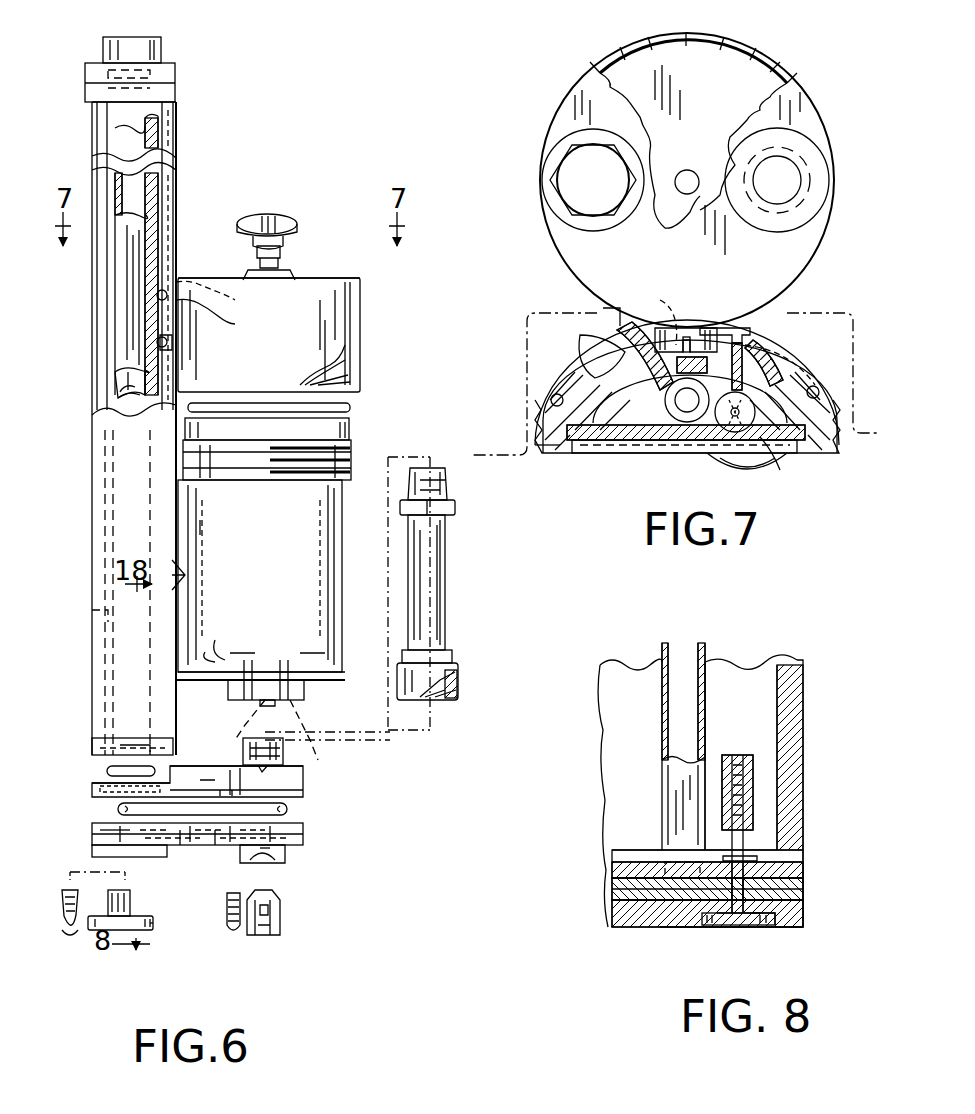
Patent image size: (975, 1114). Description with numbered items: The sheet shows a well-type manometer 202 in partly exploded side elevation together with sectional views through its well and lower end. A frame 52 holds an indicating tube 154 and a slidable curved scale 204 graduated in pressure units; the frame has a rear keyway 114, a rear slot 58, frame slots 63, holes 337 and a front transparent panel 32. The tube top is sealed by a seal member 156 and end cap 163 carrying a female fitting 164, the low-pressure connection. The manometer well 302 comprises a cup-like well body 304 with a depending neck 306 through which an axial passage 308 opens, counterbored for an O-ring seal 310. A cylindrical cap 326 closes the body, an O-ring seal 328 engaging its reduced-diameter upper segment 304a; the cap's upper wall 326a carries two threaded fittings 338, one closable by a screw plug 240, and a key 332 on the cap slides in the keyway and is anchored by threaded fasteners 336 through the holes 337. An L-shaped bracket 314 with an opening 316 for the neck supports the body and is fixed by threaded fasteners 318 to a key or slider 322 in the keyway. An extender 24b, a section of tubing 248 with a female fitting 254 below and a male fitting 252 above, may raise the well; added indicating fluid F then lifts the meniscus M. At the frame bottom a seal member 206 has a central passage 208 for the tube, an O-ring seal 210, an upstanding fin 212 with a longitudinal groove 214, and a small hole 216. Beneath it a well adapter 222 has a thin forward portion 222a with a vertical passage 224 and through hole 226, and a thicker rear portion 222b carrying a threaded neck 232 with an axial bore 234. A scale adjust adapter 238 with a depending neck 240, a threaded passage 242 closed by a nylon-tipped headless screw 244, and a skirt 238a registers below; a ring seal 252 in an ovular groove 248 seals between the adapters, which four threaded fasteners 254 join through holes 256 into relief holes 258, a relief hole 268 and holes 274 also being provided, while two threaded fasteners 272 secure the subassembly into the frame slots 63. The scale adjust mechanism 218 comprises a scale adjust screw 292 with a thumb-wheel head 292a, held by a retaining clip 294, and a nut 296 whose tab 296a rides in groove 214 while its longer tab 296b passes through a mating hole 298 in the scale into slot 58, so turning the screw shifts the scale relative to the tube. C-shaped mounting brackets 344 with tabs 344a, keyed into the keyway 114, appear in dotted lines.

In FIG. 6, the frame 52 is at (108, 445).
In FIG. 8, the frame 52 is at (805, 687).
In FIG. 6, the indicating tube 154 is at (128, 276).
In FIG. 7, the indicating tube 154 is at (665, 397).
In FIG. 8, the indicating tube 154 is at (662, 649).
In FIG. 6, the curved scale 204 is at (160, 192).
In FIG. 7, the curved scale 204 is at (580, 375).
In FIG. 8, the curved scale 204 is at (742, 662).
In FIG. 6, the keyway 114 is at (170, 234).
In FIG. 7, the keyway 114 is at (665, 328).
In FIG. 6, the female fitting 164 is at (150, 45).
In FIG. 6, the end cap 163 is at (160, 70).
In FIG. 6, the seal member 156 is at (170, 91).
In FIG. 6, the well-type manometer 202 is at (242, 94).
In FIG. 7, the well-type manometer 202 is at (528, 205).
In FIG. 6, the screw plug 240 is at (252, 220).
In FIG. 7, the screw plug 240 is at (548, 171).
In FIG. 6, the manometer well 302 is at (312, 238).
In FIG. 7, the manometer well 302 is at (525, 121).
In FIG. 6, the internally threaded fittings 338 is at (290, 266).
In FIG. 7, the internally threaded fittings 338 is at (798, 182).
In FIG. 6, the key 332 is at (180, 276).
In FIG. 7, the key 332 is at (688, 330).
In FIG. 6, the threaded fasteners 336 is at (255, 342).
In FIG. 7, the threaded fasteners 336 is at (668, 309).
In FIG. 6, the cap 326 is at (358, 303).
In FIG. 7, the cap 326 is at (565, 90).
In FIG. 7, the upper wall 326a is at (806, 123).
In FIG. 6, the O-ring seal 328 is at (352, 406).
In FIG. 6, the well body 304 is at (330, 588).
In FIG. 7, the well body 304 is at (628, 50).
In FIG. 6, the reduced-diameter upper end segment 304a is at (345, 418).
In FIG. 6, the key or slider 322 is at (205, 527).
In FIG. 6, the threaded fasteners 318 is at (186, 575).
In FIG. 6, the opening 316 is at (212, 653).
In FIG. 6, the L-shaped bracket 314 is at (205, 686).
In FIG. 6, the neck 306 is at (306, 687).
In FIG. 6, the axial passage 308 is at (232, 720).
In FIG. 7, the axial passage 308 is at (698, 157).
In FIG. 6, the O-ring seal 310 is at (327, 730).
In FIG. 6, the bolt assembly 24b is at (455, 562).
In FIG. 6, the ring seal 252 is at (456, 503).
In FIG. 6, the ovular groove 248 is at (432, 593).
In FIG. 6, the threaded fasteners 254 is at (458, 663).
In FIG. 6, the seal member 206 is at (95, 740).
In FIG. 7, the seal member 206 is at (795, 456).
In FIG. 8, the seal member 206 is at (612, 867).
In FIG. 6, the central passage 208 is at (98, 751).
In FIG. 8, the central passage 208 is at (665, 855).
In FIG. 6, the O-ring seal 210 is at (105, 770).
In FIG. 6, the upstanding fin 212 is at (100, 625).
In FIG. 6, the well adapter 222 is at (306, 795).
In FIG. 8, the well adapter 222 is at (612, 889).
In FIG. 6, the forward portion 222a is at (92, 785).
In FIG. 6, the rear portion 222b is at (306, 778).
In FIG. 6, the vertical passage 224 is at (115, 797).
In FIG. 6, the threaded neck 232 is at (285, 757).
In FIG. 6, the axial bore 234 is at (242, 745).
In FIG. 6, the scale adjust adapter 238 is at (306, 840).
In FIG. 8, the scale adjust adapter 238 is at (625, 923).
In FIG. 6, the skirt 238a is at (92, 851).
In FIG. 6, the threaded axial passage 242 is at (268, 865).
In FIG. 6, the nylon tipped headless screw 244 is at (282, 910).
In FIG. 6, the holes 256 is at (222, 845).
In FIG. 6, the threaded relief holes 258 is at (206, 778).
In FIG. 6, the threaded fasteners 272 is at (65, 918).
In FIG. 7, the threaded fasteners 272 is at (551, 398).
In FIG. 6, the registering holes 274 is at (100, 831).
In FIG. 6, the scale adjust screw 292 is at (130, 897).
In FIG. 7, the scale adjust screw 292 is at (792, 367).
In FIG. 8, the scale adjust screw 292 is at (672, 925).
In FIG. 6, the screw head 292a is at (152, 926).
In FIG. 7, the screw head 292a is at (735, 448).
In FIG. 8, the screw head 292a is at (730, 925).
In FIG. 7, the nut 296 is at (740, 438).
In FIG. 8, the nut 296 is at (760, 758).
In FIG. 7, the tab 296a is at (705, 446).
In FIG. 7, the second tab 296b is at (745, 325).
In FIG. 7, the mating hole 298 is at (780, 365).
In FIG. 8, the retaining clip 294 is at (798, 841).
In FIG. 8, the hole 216 is at (758, 857).
In FIG. 8, the through hole 226 is at (745, 898).
In FIG. 8, the threaded relief hole 268 is at (780, 918).
In FIG. 7, the scale adjust mechanism 218 is at (680, 468).
In FIG. 8, the scale adjust mechanism 218 is at (760, 838).
In FIG. 7, the longitudinal groove 214 is at (772, 483).
In FIG. 7, the slot 58 is at (750, 326).
In FIG. 7, the frame slots 63 is at (548, 395).
In FIG. 7, the transparent panel 32 is at (585, 455).
In FIG. 7, the C-shaped brackets 344 is at (520, 347).
In FIG. 7, the bracket tabs 344a is at (522, 423).
In FIG. 7, the holes 337 is at (610, 307).
In FIG. 6, the meniscus M is at (128, 380).
In FIG. 6, the indicating fluid F is at (120, 405).